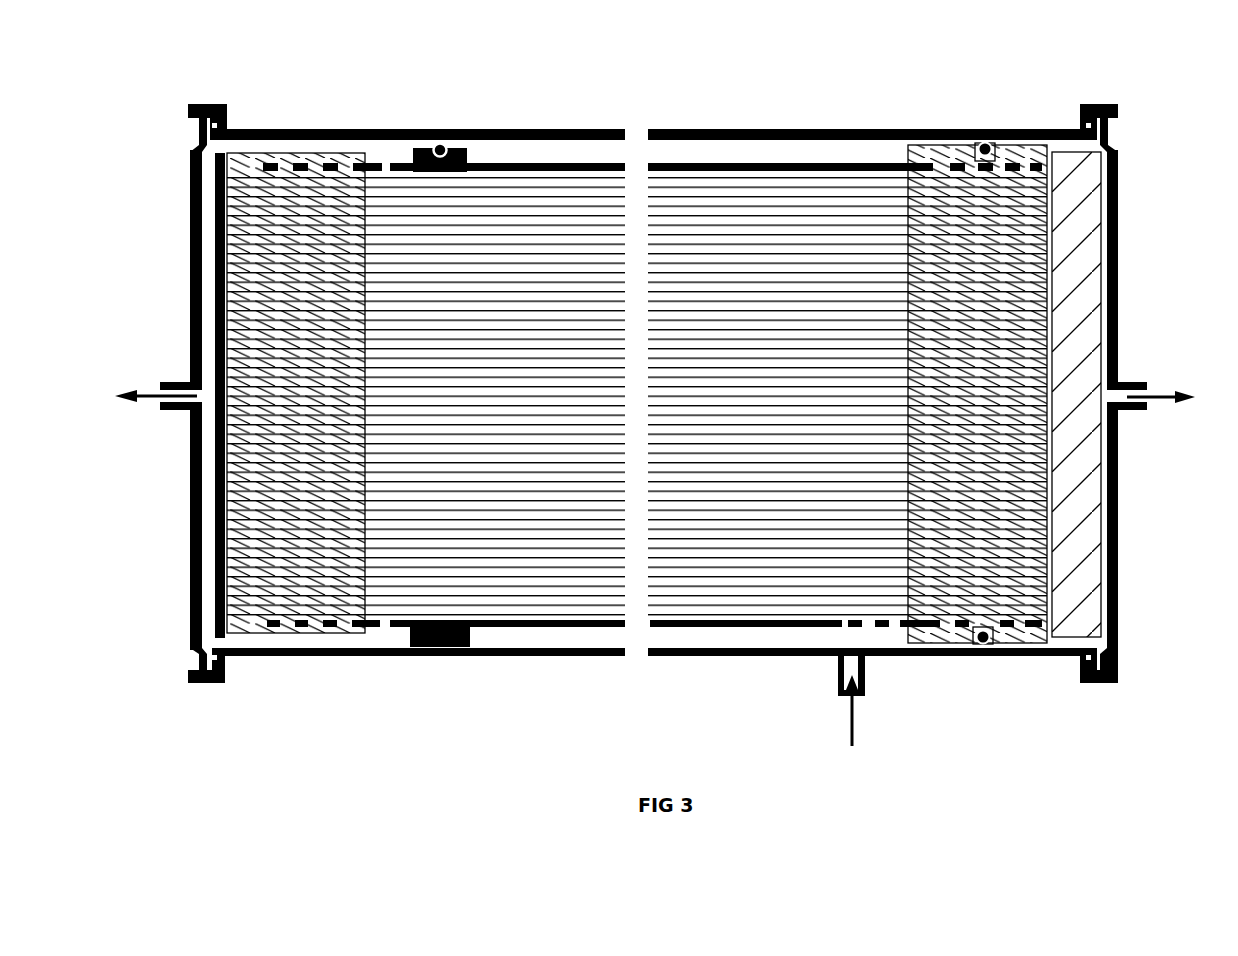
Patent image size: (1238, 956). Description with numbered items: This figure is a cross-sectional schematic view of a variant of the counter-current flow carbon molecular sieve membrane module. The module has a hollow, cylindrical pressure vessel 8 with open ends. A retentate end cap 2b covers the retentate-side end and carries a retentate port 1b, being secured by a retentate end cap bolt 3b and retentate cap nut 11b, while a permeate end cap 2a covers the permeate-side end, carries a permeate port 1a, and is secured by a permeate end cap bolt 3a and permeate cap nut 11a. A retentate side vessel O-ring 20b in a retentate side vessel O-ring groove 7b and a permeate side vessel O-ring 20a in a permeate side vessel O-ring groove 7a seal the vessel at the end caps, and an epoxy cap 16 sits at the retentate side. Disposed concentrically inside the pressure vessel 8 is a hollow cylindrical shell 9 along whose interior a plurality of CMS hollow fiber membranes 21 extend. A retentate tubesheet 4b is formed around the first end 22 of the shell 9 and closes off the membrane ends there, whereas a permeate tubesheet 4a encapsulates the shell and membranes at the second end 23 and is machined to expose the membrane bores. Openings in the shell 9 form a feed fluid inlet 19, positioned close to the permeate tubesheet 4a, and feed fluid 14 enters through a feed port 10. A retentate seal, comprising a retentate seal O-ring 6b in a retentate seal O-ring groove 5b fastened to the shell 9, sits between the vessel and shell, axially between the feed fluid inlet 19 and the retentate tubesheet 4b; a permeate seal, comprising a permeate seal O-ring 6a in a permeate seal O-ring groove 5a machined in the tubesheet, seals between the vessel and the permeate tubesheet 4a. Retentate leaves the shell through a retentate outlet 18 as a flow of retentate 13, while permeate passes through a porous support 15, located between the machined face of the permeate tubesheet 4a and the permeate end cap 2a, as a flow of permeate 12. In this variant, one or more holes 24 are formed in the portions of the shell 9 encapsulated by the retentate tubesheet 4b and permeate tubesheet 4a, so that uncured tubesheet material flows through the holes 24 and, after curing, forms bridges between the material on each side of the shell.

The permeate port 1a is at (1136, 417).
The retentate port 1b is at (170, 420).
The permeate end cap 2a is at (1130, 545).
The retentate end cap 2b is at (186, 538).
The permeate end cap bolt 3a is at (1078, 107).
The retentate end cap bolt 3b is at (228, 108).
The permeate tubesheet 4a is at (1030, 160).
The retentate tubesheet 4b is at (242, 164).
The permeate seal O-ring groove 5a is at (968, 642).
The retentate seal O-ring groove 5b is at (467, 642).
The permeate seal O-ring 6a is at (983, 650).
The retentate seal O-ring 6b is at (440, 650).
The permeate side vessel O-ring groove 7a is at (1075, 661).
The retentate side vessel O-ring groove 7b is at (232, 665).
The pressure vessel 8 is at (705, 659).
The shell 9 is at (672, 633).
The feed port 10 is at (833, 679).
The permeate cap nut 11a is at (1122, 120).
The retentate cap nut 11b is at (188, 118).
The flow of permeate 12 is at (1171, 392).
The flow of retentate 13 is at (145, 393).
The flow of feed fluid 14 is at (857, 730).
The porous support 15 is at (1087, 339).
The epoxy cap 16 is at (215, 250).
The retentate outlet 18 is at (386, 164).
The feed fluid inlet 19 is at (843, 633).
The permeate side vessel O-ring 20a is at (1080, 672).
The retentate side vessel O-ring 20b is at (228, 678).
The CMS hollow fiber membranes 21 is at (591, 583).
The first end of the shell 22 is at (300, 668).
The second end of the shell 23 is at (1014, 660).
The holes 24 is at (320, 163).